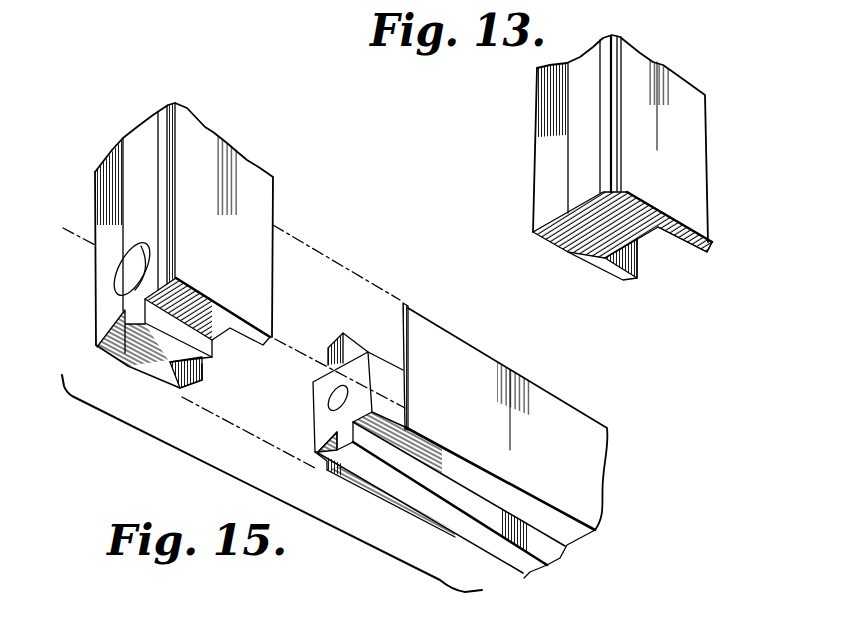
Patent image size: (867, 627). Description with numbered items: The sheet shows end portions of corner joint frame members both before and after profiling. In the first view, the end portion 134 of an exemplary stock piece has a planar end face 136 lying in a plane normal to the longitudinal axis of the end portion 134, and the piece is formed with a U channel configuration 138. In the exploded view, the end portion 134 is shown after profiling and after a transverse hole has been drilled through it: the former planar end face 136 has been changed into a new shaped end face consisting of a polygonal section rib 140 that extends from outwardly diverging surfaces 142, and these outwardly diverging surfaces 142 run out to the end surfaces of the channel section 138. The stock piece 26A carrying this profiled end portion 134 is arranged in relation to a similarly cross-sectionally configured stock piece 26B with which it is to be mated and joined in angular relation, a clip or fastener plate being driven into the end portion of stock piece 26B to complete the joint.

In FIG. 15, the stock piece 26A is at (176, 238).
In FIG. 15, the stock piece 26B is at (557, 420).
In FIG. 13, the end portion 134 is at (673, 97).
In FIG. 15, the end portion 134 is at (233, 167).
In FIG. 13, the planar end face 136 is at (580, 238).
In FIG. 13, the U channel configuration 138 is at (686, 250).
In FIG. 15, the U channel configuration 138 is at (247, 342).
In FIG. 15, the polygonal section rib 140 is at (158, 316).
In FIG. 15, the outwardly diverging surfaces 142 is at (210, 310).